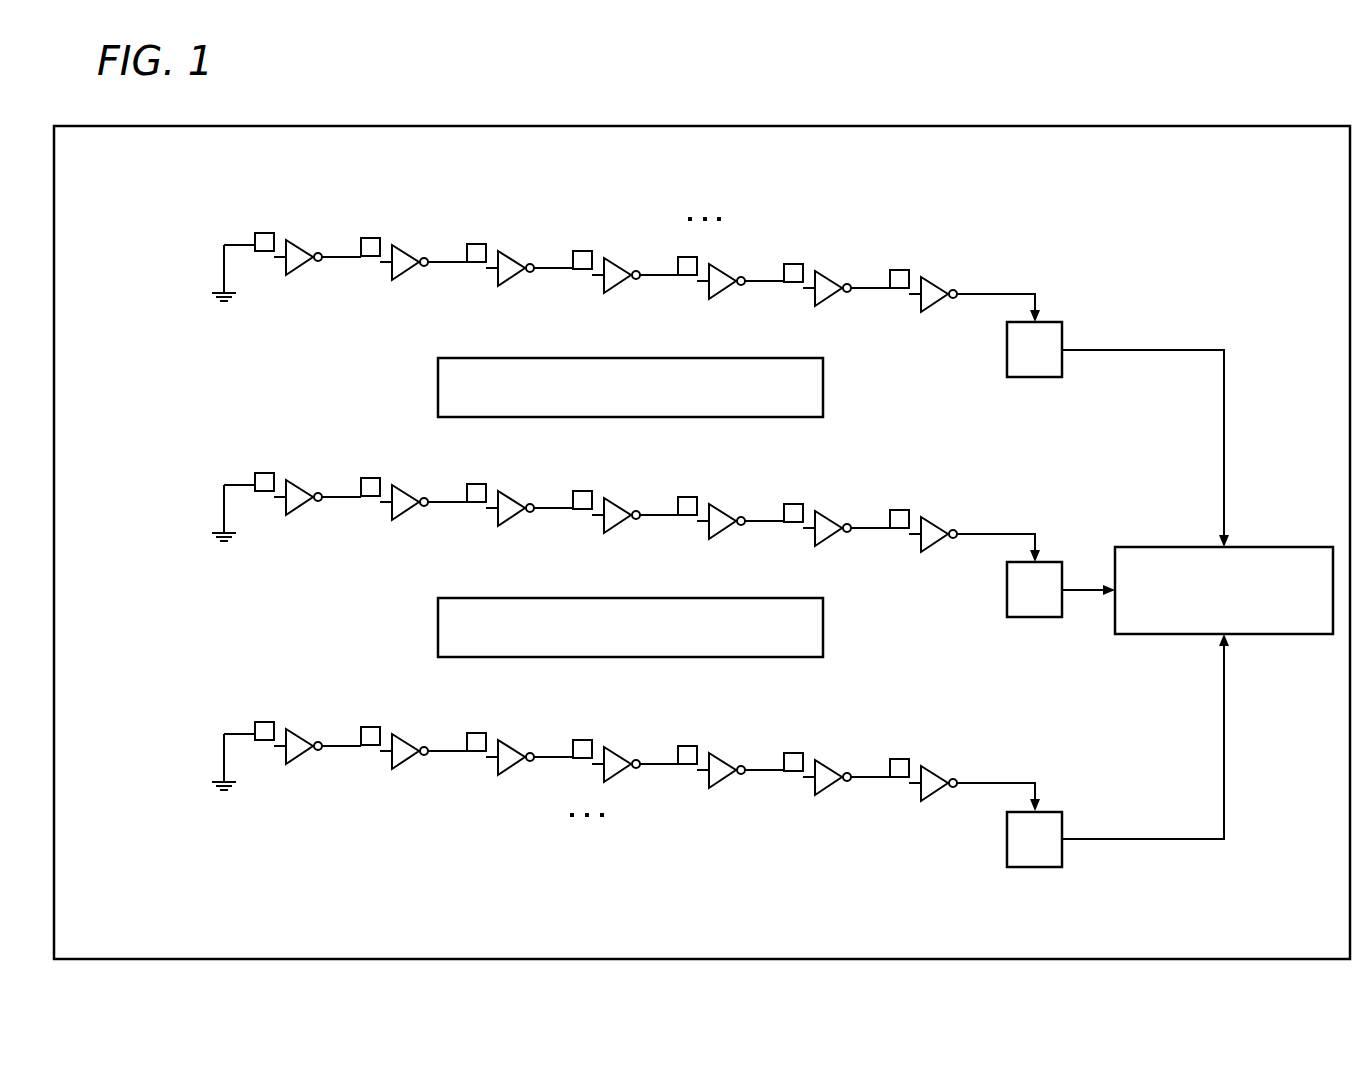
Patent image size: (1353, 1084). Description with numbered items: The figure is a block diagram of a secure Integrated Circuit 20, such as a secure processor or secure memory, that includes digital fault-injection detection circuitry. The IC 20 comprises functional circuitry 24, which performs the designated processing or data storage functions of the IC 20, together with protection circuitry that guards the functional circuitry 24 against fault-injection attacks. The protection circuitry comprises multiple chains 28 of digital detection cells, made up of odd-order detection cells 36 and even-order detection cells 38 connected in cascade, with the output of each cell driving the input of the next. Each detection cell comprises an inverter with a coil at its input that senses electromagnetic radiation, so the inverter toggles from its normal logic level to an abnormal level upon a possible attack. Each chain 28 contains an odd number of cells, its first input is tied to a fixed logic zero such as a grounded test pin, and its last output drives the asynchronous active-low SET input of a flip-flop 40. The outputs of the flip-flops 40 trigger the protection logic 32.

The secure Integrated Circuit 20 is at (1105, 126).
The functional circuitry 24 is at (438, 380).
The chain of digital detection cells 28 is at (180, 259).
The protection logic 32 is at (1294, 547).
The odd-order detection cell 36 is at (600, 518).
The even-order detection cell 38 is at (599, 518).
The flip-flop 40 is at (1033, 377).